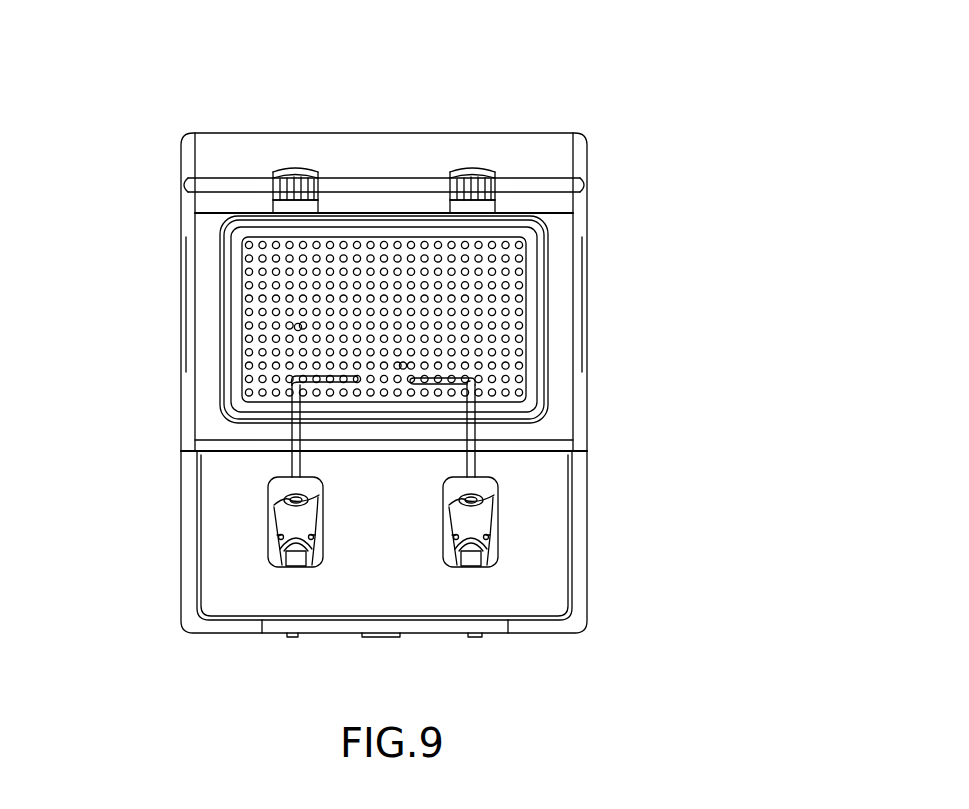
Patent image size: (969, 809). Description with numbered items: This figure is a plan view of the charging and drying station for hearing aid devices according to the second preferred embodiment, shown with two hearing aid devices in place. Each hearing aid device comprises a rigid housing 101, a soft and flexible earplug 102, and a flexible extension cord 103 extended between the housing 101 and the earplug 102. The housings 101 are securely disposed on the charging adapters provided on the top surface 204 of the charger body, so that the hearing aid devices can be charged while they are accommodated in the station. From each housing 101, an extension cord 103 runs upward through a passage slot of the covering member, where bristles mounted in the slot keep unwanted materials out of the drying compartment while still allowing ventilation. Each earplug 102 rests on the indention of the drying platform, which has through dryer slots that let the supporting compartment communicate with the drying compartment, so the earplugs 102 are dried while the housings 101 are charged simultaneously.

The housing 101 is at (490, 513).
The earplug 102 is at (403, 365).
The extension cord 103 is at (470, 447).
The top surface 204 is at (540, 558).